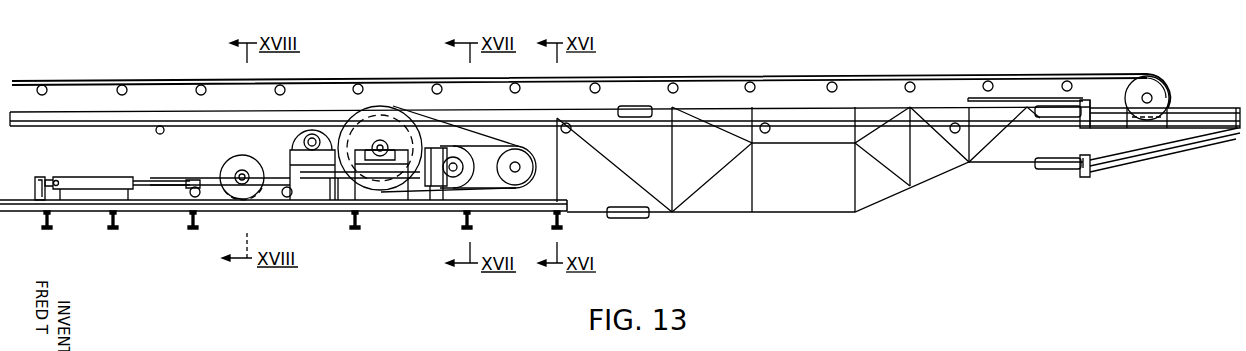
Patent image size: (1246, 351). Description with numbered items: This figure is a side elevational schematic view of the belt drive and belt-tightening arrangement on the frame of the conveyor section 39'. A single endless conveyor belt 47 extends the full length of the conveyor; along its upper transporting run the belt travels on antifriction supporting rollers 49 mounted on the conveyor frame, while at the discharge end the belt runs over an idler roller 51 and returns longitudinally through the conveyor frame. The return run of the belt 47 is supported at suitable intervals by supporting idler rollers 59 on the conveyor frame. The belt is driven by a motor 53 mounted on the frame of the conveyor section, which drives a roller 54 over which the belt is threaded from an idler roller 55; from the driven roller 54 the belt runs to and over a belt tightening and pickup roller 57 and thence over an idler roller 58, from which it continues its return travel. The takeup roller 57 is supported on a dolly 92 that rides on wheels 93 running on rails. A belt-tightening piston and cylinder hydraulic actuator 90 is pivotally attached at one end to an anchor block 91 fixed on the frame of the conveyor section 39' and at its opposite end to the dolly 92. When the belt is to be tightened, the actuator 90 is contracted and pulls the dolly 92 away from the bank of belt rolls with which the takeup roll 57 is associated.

The conveyor section 39' is at (283, 239).
The endless conveyor belt 47 is at (182, 80).
The antifriction supporting rollers 49 is at (46, 84).
The idler roller 51 is at (1148, 90).
The motor 53 is at (522, 151).
The pulley 54 is at (455, 152).
The idler roller 55 is at (383, 126).
The belt tightening and pickup roller 57 is at (245, 162).
The idler roller 58 is at (312, 126).
The supporting idler rollers 59 is at (156, 133).
The piston and cylinder hydraulic actuator 90 is at (88, 178).
The anchor block 91 is at (40, 178).
The dolly 92 is at (196, 180).
The wheels 93 is at (193, 197).